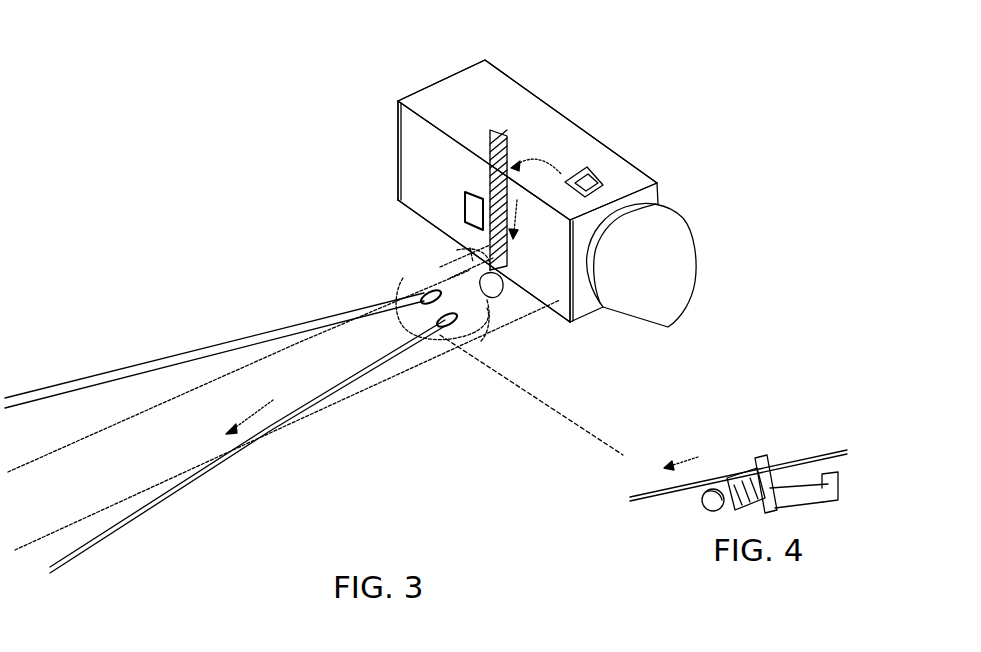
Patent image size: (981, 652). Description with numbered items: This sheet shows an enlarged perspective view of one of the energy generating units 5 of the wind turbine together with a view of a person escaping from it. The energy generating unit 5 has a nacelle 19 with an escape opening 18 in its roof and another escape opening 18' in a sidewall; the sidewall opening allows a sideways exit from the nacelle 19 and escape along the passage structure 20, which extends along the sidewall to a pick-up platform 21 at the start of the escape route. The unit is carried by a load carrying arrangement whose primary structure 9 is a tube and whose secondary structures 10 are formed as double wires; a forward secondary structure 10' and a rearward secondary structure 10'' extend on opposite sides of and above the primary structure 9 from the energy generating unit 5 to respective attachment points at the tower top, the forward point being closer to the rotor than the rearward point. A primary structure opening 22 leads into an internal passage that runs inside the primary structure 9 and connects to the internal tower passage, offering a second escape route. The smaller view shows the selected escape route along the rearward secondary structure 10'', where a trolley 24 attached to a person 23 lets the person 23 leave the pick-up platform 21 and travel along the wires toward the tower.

In FIG. 3, the energy generating unit 5 is at (586, 58).
In FIG. 3, the nacelle 19 is at (558, 138).
In FIG. 3, the passage structure 20 is at (492, 142).
In FIG. 3, the escape opening 18 is at (618, 167).
In FIG. 3, the escape opening 18' is at (424, 211).
In FIG. 3, the pick-up platform 21 is at (440, 280).
In FIG. 3, the primary structure opening 22 is at (490, 293).
In FIG. 3, the primary structure 9 is at (373, 385).
In FIG. 3, the rearward secondary structure 10'' is at (214, 350).
In FIG. 3, the forward secondary structure 10' is at (247, 449).
In FIG. 4, the secondary structure 10 is at (738, 441).
In FIG. 4, the trolley 24 is at (752, 458).
In FIG. 4, the person 23 is at (697, 515).